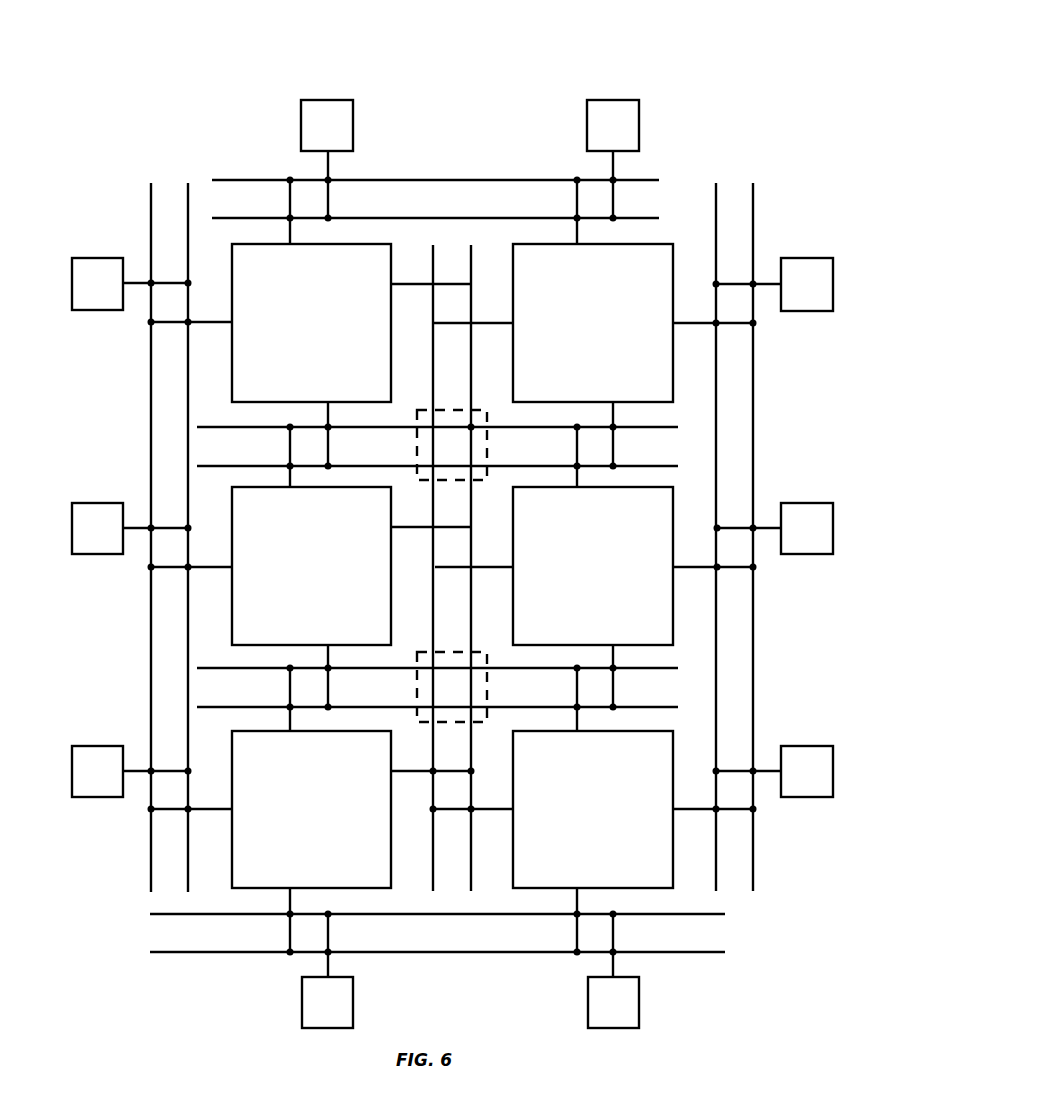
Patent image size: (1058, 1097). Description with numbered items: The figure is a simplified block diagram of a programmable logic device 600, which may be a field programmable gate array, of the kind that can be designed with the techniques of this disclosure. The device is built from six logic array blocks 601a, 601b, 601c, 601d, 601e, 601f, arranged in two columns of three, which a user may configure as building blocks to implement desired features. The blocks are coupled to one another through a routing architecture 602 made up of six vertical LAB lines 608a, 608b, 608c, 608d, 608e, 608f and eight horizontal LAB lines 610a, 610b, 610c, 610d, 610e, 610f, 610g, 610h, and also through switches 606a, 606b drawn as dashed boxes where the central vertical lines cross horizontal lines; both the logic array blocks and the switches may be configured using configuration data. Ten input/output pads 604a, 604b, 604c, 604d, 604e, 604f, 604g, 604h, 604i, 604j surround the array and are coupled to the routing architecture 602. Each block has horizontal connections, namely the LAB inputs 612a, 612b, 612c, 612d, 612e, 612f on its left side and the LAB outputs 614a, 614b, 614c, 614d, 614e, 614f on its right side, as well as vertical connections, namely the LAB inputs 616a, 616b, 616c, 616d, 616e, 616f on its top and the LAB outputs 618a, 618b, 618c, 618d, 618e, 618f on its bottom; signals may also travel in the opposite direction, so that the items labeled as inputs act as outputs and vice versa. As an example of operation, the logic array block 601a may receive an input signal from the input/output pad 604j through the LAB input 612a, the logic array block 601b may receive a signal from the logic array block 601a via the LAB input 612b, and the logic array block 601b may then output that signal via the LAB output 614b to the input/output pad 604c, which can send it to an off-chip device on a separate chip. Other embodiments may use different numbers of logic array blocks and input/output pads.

The programmable logic device 600 is at (706, 49).
The routing architecture 602 is at (127, 449).
The logic array block 601a is at (311, 323).
The logic array block 601b is at (593, 323).
The logic array block 601c is at (311, 566).
The logic array block 601d is at (593, 566).
The logic array block 601e is at (311, 809).
The logic array block 601f is at (593, 809).
The input/output pad 604a is at (328, 100).
The input/output pad 604b is at (613, 100).
The input/output pad 604c is at (805, 258).
The input/output pad 604d is at (806, 503).
The input/output pad 604e is at (806, 746).
The input/output pad 604f is at (640, 1000).
The input/output pad 604g is at (354, 1000).
The input/output pad 604h is at (98, 797).
The input/output pad 604i is at (98, 554).
The input/output pad 604j is at (98, 310).
The switch 606a is at (487, 442).
The switch 606b is at (487, 684).
The vertical LAB line 608a is at (151, 195).
The vertical LAB line 608b is at (188, 183).
The vertical LAB line 608c is at (433, 265).
The vertical LAB line 608d is at (471, 310).
The vertical LAB line 608e is at (716, 197).
The vertical LAB line 608f is at (756, 228).
The horizontal LAB line 610a is at (642, 180).
The horizontal LAB line 610b is at (650, 220).
The horizontal LAB line 610c is at (652, 427).
The horizontal LAB line 610d is at (652, 466).
The horizontal LAB line 610e is at (652, 668).
The horizontal LAB line 610f is at (652, 707).
The horizontal LAB line 610g is at (650, 914).
The horizontal LAB line 610h is at (650, 952).
The LAB input 612a is at (208, 323).
The LAB input 612b is at (488, 324).
The LAB input 612c is at (208, 568).
The LAB input 612d is at (488, 568).
The LAB input 612e is at (208, 810).
The LAB input 612f is at (488, 810).
The LAB output 614a is at (396, 286).
The LAB output 614b is at (687, 324).
The LAB output 614c is at (396, 529).
The LAB output 614d is at (687, 568).
The LAB output 614e is at (396, 773).
The LAB output 614f is at (687, 810).
The LAB input 616a is at (290, 233).
The LAB input 616b is at (577, 233).
The LAB input 616c is at (290, 479).
The LAB input 616d is at (577, 479).
The LAB input 616e is at (290, 721).
The LAB input 616f is at (577, 721).
The LAB output 618a is at (328, 415).
The LAB output 618b is at (613, 415).
The LAB output 618c is at (328, 657).
The LAB output 618d is at (613, 657).
The LAB output 618e is at (290, 902).
The LAB output 618f is at (577, 902).